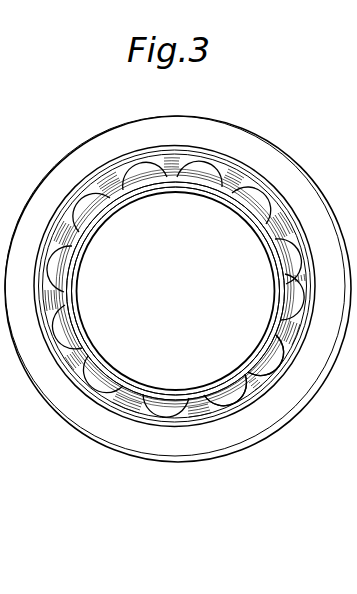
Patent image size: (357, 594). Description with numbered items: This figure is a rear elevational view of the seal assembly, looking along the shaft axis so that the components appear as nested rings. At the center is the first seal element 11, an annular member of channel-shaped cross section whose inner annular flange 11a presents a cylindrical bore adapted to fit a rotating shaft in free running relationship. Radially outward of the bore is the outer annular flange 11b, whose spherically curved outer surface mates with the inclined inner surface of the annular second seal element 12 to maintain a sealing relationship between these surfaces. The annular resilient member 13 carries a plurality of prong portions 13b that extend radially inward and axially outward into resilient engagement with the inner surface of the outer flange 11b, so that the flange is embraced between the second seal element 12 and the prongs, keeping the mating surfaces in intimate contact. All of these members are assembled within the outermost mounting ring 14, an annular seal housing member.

The first seal element 11 is at (73, 282).
The inner annular flange 11a is at (80, 315).
The outer annular flange 11b is at (72, 349).
The second seal element 12 is at (108, 397).
The annular resilient member 13 is at (170, 411).
The prong portions 13b is at (262, 368).
The mounting ring 14 is at (317, 343).